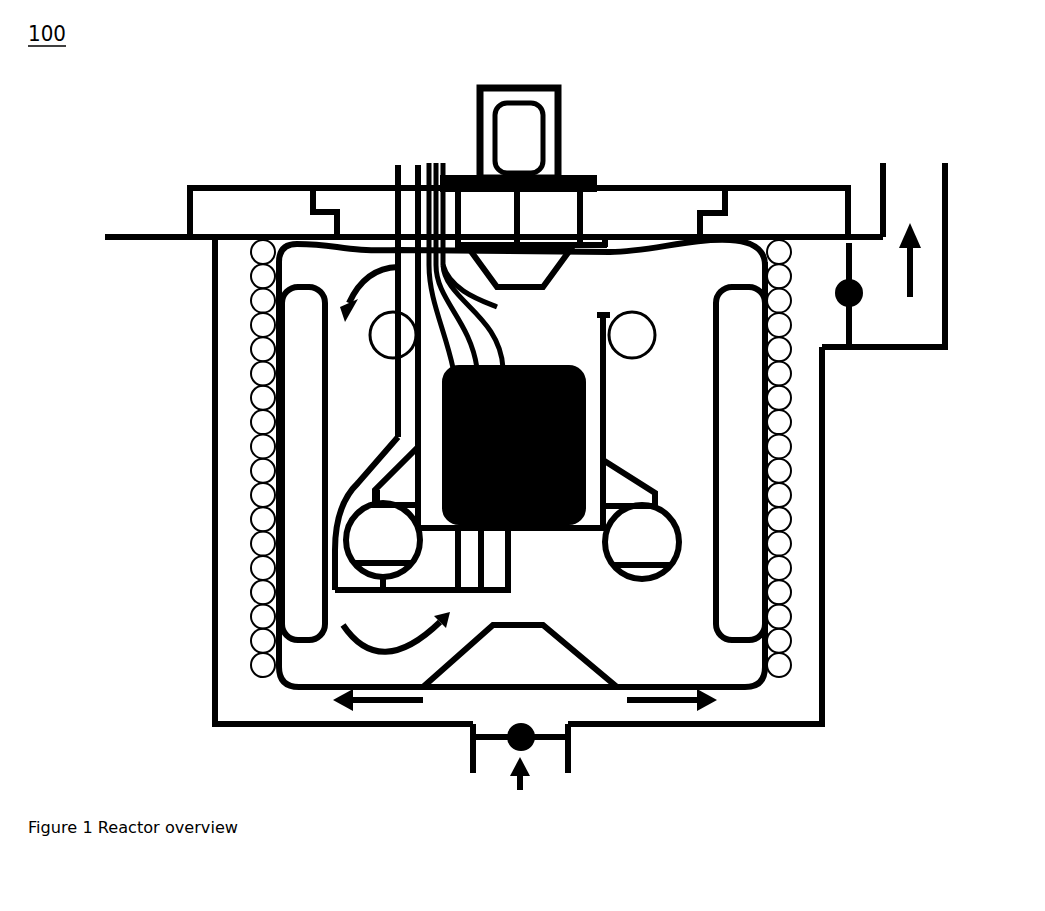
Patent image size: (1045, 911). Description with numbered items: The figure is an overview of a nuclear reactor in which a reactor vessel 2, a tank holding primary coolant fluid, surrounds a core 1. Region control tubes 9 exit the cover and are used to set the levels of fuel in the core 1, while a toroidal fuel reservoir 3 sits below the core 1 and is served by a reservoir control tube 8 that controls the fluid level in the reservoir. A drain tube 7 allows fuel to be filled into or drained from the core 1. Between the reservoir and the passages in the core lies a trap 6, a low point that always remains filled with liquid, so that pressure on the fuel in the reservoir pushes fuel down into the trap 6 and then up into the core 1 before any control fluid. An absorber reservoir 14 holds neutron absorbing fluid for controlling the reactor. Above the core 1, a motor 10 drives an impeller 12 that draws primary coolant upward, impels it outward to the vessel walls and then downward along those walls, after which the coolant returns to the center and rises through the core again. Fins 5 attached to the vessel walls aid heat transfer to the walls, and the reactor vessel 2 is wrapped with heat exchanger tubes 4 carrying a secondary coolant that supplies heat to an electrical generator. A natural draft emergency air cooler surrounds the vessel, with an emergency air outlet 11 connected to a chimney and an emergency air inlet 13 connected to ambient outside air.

The core 1 is at (583, 383).
The reactor vessel 2 is at (267, 487).
The toroidal fuel reservoir 3 is at (678, 570).
The heat exchanger tubes 4 is at (790, 273).
The fins 5 is at (297, 394).
The trap 6 is at (360, 593).
The drain tube 7 is at (388, 163).
The reservoir control tube 8 is at (407, 152).
The region control tubes 9 is at (447, 90).
The motor 10 is at (560, 123).
The emergency air outlet 11 is at (917, 197).
The impeller 12 is at (567, 273).
The emergency air inlet 13 is at (543, 773).
The absorber reservoir 14 is at (643, 341).